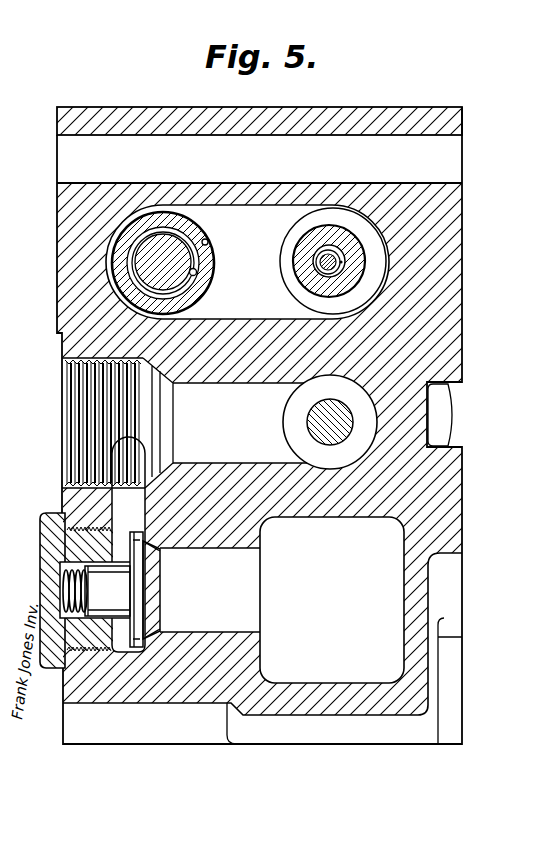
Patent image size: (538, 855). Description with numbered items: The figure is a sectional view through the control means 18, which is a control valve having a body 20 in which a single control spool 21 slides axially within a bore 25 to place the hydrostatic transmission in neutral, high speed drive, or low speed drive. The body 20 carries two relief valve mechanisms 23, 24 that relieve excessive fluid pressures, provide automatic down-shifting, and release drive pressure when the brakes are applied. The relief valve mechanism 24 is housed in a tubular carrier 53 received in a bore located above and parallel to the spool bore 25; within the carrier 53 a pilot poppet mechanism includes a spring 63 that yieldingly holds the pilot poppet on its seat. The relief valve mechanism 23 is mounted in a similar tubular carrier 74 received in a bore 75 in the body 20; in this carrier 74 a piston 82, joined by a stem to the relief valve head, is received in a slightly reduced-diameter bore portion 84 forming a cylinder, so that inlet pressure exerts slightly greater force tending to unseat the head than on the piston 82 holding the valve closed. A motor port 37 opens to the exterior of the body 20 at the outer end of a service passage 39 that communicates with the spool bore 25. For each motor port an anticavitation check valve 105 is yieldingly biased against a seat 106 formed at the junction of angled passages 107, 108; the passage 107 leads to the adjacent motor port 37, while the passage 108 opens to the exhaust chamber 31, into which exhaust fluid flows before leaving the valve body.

The control means 18 is at (44, 82).
The body 20 is at (463, 232).
The tubular carrier 53 is at (334, 226).
The spring 63 is at (318, 248).
The relief valve mechanism 23 is at (210, 231).
The bore 75 is at (208, 244).
The tubular carrier 74 is at (214, 258).
The bore portion 84 is at (197, 274).
The piston 82 is at (197, 297).
The relief valve mechanism 24 is at (301, 289).
The motor port 37 is at (77, 405).
The service passage 39 is at (210, 431).
The control spool 21 is at (298, 421).
The bore 25 is at (296, 447).
The angled passage 107 is at (127, 465).
The seat 106 is at (163, 561).
The anticavitation check valve 105 is at (152, 587).
The angled passage 108 is at (238, 608).
The exhaust chamber 31 is at (331, 595).